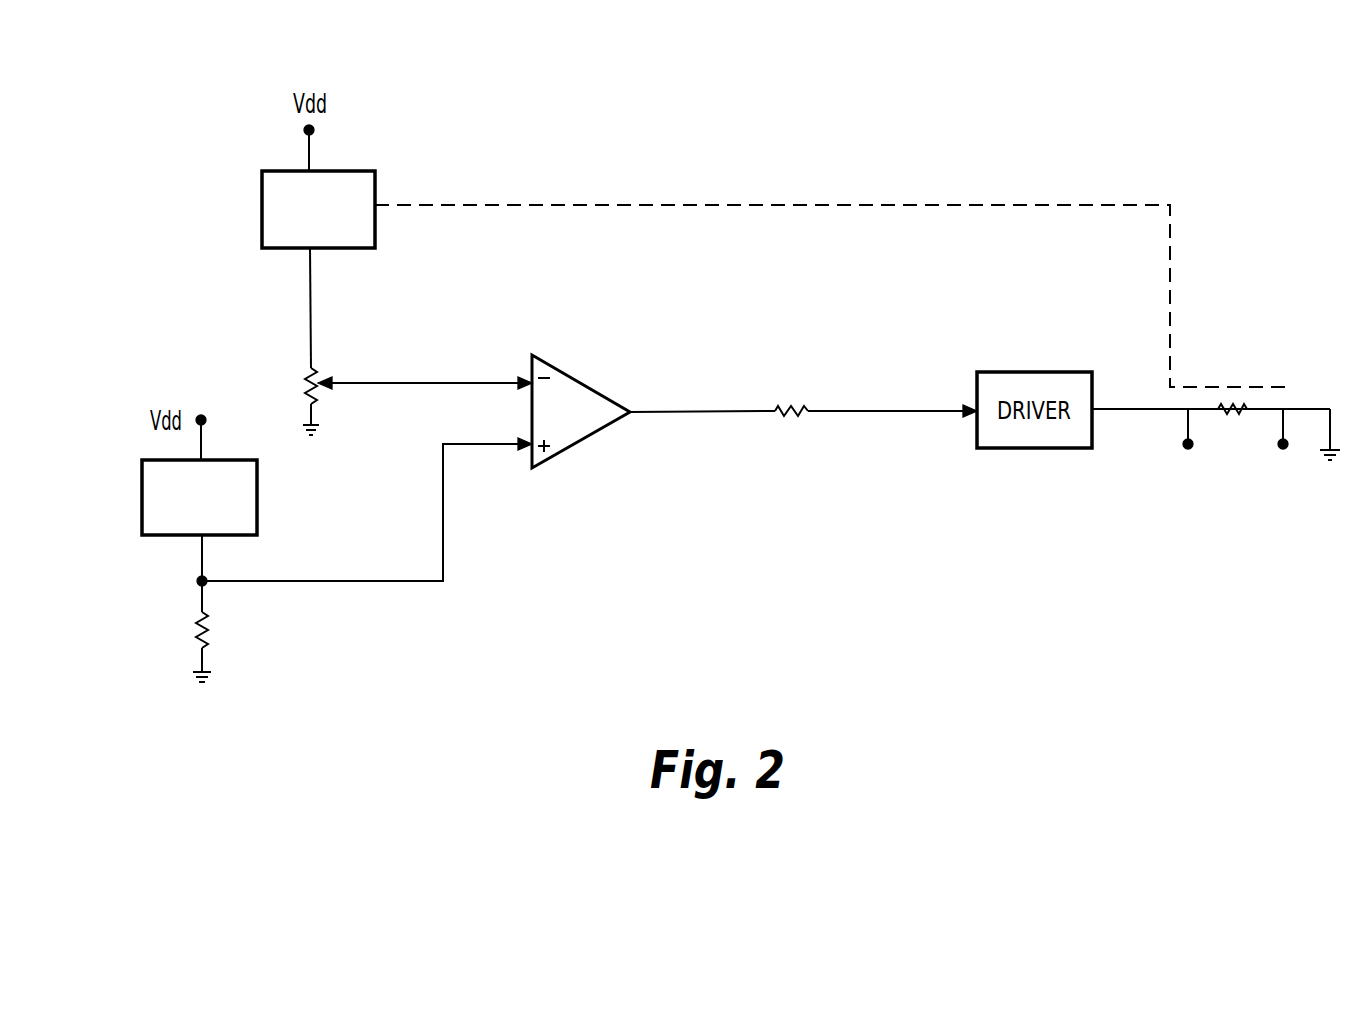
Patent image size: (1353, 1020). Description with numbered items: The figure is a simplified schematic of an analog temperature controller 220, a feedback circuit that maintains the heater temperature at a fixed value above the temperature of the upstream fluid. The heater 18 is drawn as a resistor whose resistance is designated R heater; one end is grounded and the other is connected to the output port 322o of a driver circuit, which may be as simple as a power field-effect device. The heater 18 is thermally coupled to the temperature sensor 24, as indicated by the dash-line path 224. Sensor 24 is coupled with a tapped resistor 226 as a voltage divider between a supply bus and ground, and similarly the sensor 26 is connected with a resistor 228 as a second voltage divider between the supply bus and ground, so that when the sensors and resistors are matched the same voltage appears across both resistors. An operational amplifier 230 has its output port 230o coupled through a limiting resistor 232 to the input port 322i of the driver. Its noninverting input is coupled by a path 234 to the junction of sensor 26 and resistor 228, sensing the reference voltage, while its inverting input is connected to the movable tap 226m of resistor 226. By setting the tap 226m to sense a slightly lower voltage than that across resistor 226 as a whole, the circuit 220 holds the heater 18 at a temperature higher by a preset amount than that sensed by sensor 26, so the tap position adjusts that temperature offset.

The temperature sensor 24 is at (262, 210).
The sensor 26 is at (142, 498).
The dash-line path 224 is at (932, 206).
The tapped resistor 226 is at (307, 387).
The movable tap 226m is at (399, 380).
The resistor 228 is at (197, 628).
The operational amplifier 230 is at (589, 436).
The output port 230o is at (633, 406).
The limiting resistor 232 is at (793, 416).
The path 234 is at (443, 531).
The input port 322i is at (971, 406).
The output port 322o is at (1095, 419).
The heater 18 is at (1233, 415).
The temperature controller 220 is at (708, 544).